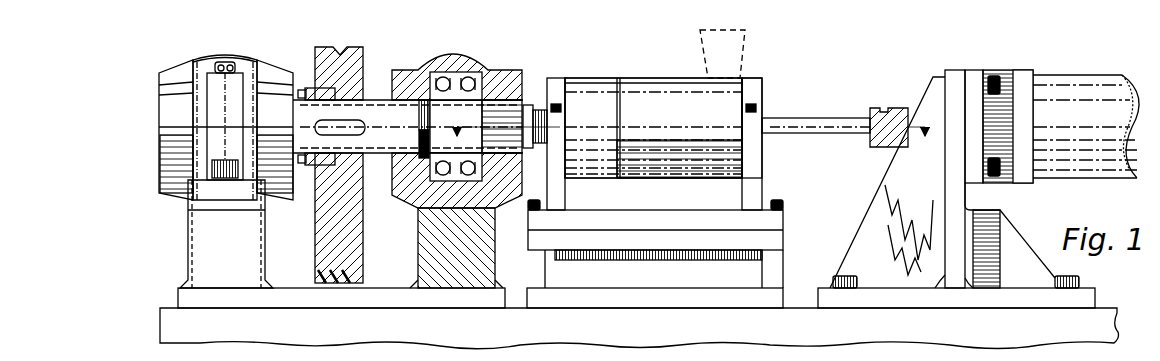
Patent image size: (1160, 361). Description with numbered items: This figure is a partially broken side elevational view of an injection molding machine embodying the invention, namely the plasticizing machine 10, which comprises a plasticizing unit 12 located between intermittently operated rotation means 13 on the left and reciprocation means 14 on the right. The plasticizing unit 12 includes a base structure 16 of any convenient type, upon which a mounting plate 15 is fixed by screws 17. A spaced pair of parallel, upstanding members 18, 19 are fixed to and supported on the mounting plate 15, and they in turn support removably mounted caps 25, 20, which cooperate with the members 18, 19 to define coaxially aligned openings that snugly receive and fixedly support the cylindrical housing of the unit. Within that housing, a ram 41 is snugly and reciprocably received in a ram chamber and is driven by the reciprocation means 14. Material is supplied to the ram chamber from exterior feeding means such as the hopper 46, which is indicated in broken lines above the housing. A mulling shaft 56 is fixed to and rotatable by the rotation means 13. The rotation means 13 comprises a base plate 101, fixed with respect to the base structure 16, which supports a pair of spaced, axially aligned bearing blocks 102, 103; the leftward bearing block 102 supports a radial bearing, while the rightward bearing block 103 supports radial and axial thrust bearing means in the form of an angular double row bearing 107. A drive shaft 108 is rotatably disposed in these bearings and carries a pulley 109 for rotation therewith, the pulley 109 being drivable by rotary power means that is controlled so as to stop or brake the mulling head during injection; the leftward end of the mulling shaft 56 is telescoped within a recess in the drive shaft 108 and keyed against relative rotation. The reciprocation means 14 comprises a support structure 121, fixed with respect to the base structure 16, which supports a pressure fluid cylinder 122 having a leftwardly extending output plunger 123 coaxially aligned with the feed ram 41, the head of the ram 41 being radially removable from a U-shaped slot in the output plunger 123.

The plasticizing machine 10 is at (828, 30).
The plasticizing unit 12 is at (775, 73).
The rotation means 13 is at (537, 27).
The reciprocation means 14 is at (1008, 62).
The mounting plate 15 is at (784, 216).
The base structure 16 is at (784, 241).
The screws 17 is at (784, 200).
The upstanding member 18 is at (562, 202).
The upstanding member 19 is at (762, 163).
The cap 20 is at (763, 100).
The cap 25 is at (561, 92).
The ram 41 is at (782, 125).
The hopper 46 is at (746, 40).
The mulling shaft 56 is at (546, 100).
The base plate 101 is at (183, 297).
The bearing block 102 is at (253, 60).
The bearing block 103 is at (420, 70).
The angular double row bearing 107 is at (476, 72).
The drive shaft 108 is at (408, 126).
The pulley 109 is at (362, 52).
The support structure 121 is at (876, 196).
The pressure fluid cylinder 122 is at (1028, 76).
The output plunger 123 is at (906, 115).